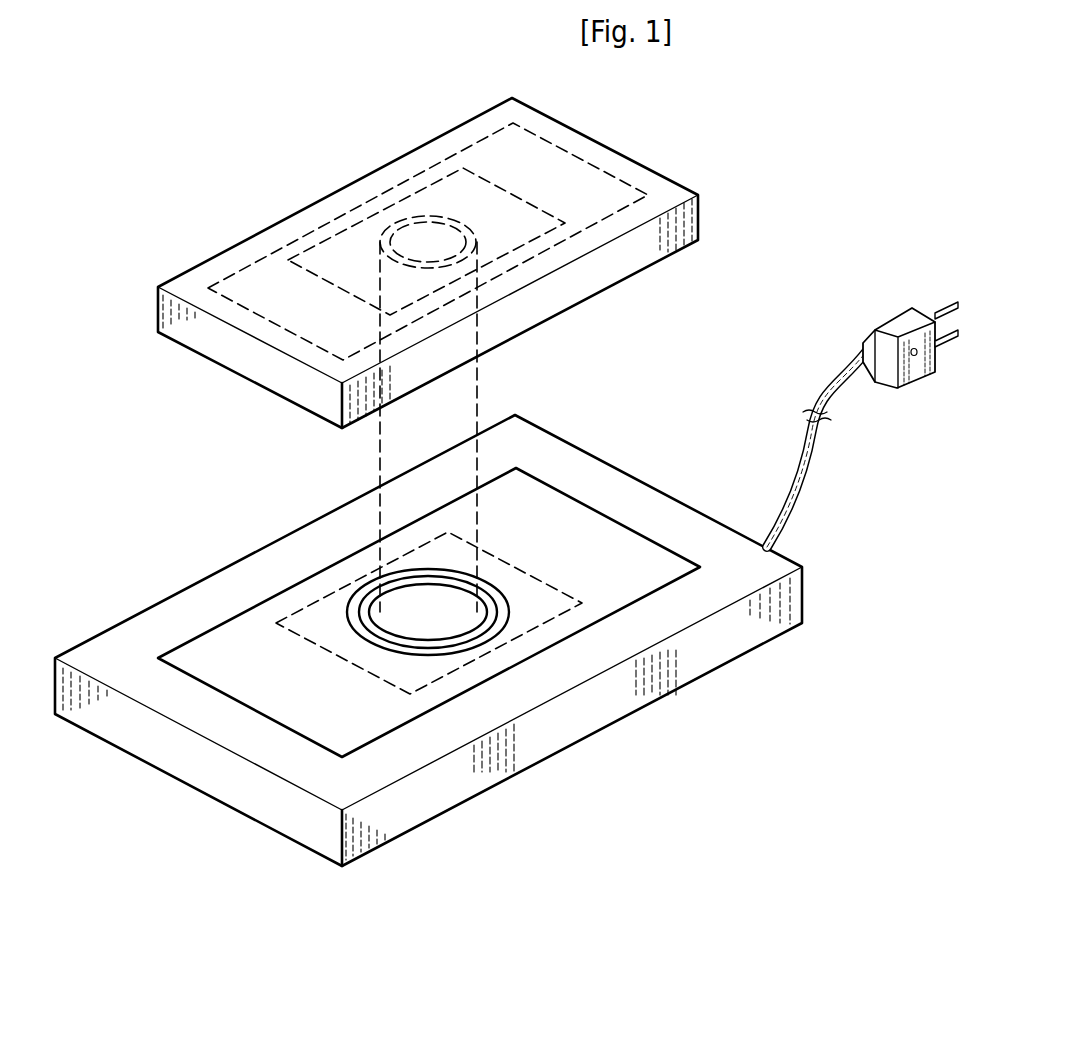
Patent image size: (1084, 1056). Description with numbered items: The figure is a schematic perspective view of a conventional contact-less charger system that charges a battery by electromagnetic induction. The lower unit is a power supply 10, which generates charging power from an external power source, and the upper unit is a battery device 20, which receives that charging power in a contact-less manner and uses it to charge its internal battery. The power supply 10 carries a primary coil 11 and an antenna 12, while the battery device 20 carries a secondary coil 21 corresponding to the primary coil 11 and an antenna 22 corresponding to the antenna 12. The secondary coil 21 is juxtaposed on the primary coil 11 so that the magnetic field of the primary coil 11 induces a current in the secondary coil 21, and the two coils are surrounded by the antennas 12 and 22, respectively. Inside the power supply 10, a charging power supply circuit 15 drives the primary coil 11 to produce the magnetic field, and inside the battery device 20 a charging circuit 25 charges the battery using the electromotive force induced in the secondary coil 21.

The power supply 10 is at (650, 492).
The primary coil 11 is at (364, 588).
The antenna 12 is at (313, 601).
The charging power supply circuit 15 is at (243, 608).
The battery device 20 is at (595, 147).
The secondary coil 21 is at (408, 225).
The antenna 22 is at (350, 234).
The charging circuit 25 is at (473, 147).